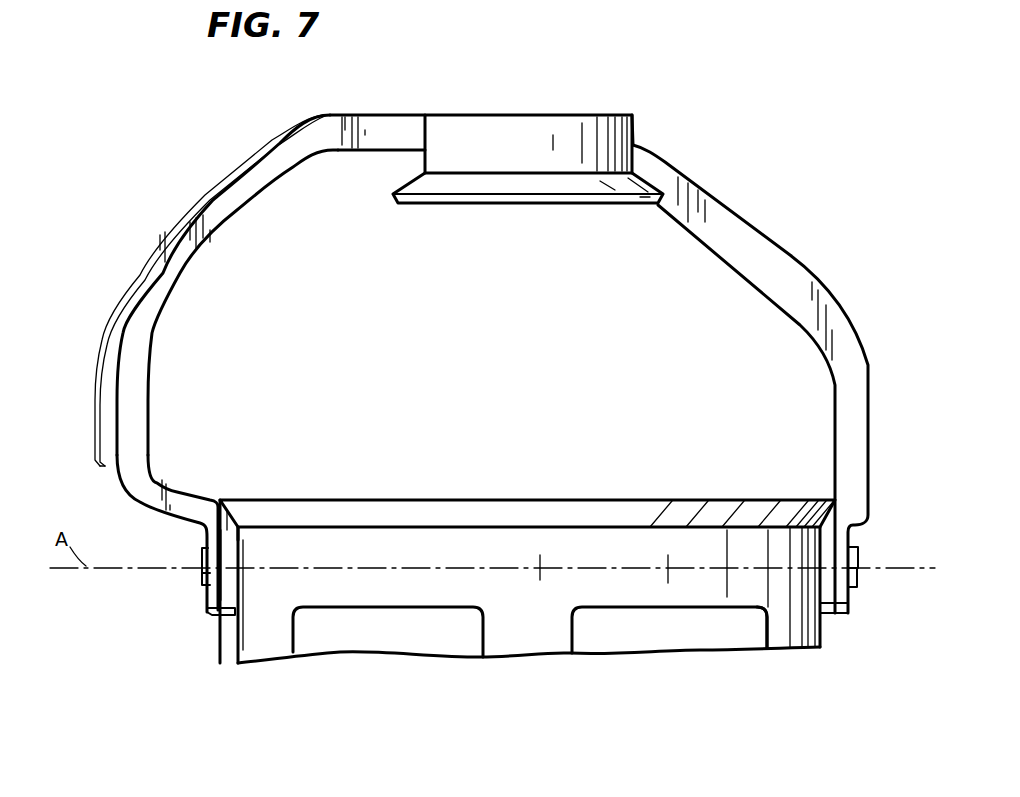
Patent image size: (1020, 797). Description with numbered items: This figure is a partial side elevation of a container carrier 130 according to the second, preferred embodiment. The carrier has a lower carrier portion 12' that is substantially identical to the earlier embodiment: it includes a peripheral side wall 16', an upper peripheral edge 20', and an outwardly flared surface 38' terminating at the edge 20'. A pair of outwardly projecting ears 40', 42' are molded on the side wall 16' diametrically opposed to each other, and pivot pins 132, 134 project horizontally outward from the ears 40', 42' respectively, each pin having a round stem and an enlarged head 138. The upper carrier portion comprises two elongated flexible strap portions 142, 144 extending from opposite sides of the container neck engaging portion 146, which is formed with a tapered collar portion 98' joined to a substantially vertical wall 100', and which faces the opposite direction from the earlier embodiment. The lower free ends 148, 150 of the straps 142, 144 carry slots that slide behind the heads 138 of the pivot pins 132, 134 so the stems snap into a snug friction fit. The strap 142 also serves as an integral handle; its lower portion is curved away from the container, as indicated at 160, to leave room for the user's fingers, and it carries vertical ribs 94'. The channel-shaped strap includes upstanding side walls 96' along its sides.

The container carrier 130 is at (840, 205).
The strap portion 144 is at (727, 200).
The upstanding side wall 96' is at (756, 409).
The container neck engaging portion 146 is at (560, 113).
The vertical wall 100' is at (384, 151).
The tapered collar portion 98' is at (528, 206).
The vertical ribs 94' is at (227, 285).
The strap portion 142 is at (165, 218).
The curved lower portion 160 is at (167, 482).
The upper peripheral edge 20' is at (527, 490).
The lower carrier portion 12' is at (492, 584).
The outwardly flared surface 38' is at (529, 583).
The outwardly projecting ear 42' is at (780, 587).
The peripheral side wall 16' is at (796, 644).
The pivot pin 134 is at (857, 550).
The enlarged head 138 is at (857, 577).
The pivot pin 132 is at (200, 578).
The lower free end 148 is at (210, 607).
The lower free end 150 is at (848, 603).
The outwardly projecting ear 40' is at (259, 565).